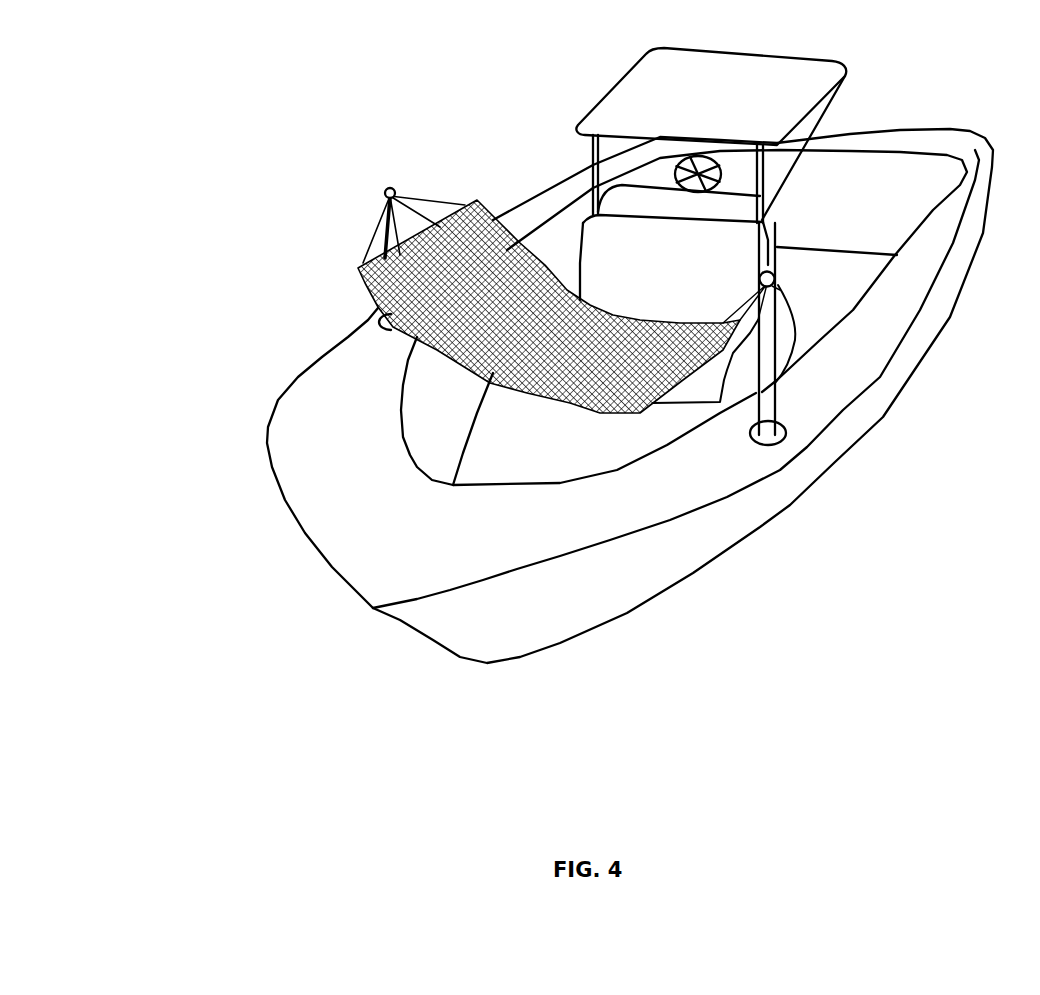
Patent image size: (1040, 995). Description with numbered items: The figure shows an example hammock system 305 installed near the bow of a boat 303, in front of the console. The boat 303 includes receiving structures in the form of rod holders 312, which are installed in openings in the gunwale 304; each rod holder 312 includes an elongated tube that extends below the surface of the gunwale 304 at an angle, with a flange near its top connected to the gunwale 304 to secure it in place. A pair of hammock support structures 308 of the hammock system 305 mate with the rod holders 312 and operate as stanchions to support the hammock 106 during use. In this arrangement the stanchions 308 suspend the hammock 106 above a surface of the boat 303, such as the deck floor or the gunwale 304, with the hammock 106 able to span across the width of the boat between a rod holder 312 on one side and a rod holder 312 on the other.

The hammock 106 is at (477, 198).
The boat 303 is at (257, 518).
The gunwale 304 is at (842, 386).
The hammock system 305 is at (366, 148).
The hammock support structure 308 is at (367, 242).
The rod holder 312 is at (372, 327).